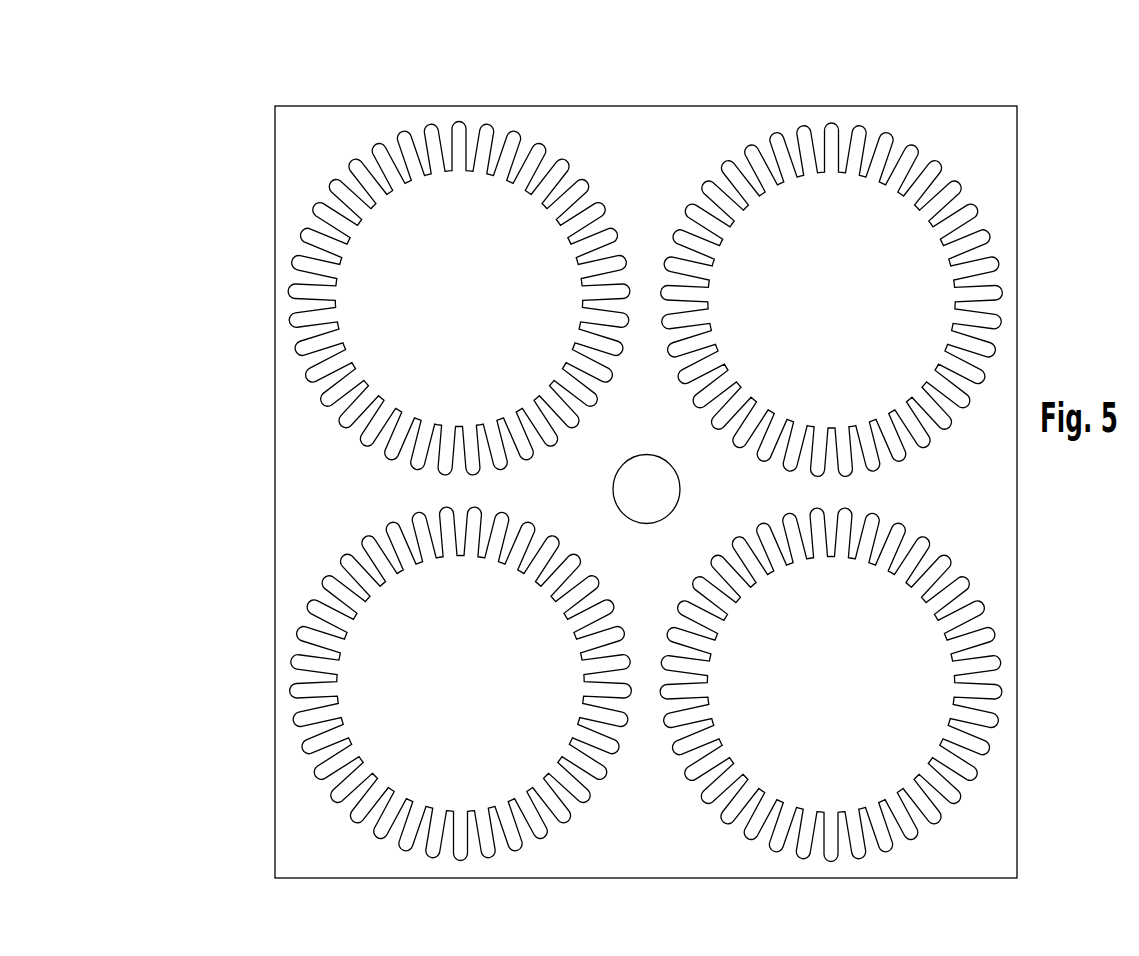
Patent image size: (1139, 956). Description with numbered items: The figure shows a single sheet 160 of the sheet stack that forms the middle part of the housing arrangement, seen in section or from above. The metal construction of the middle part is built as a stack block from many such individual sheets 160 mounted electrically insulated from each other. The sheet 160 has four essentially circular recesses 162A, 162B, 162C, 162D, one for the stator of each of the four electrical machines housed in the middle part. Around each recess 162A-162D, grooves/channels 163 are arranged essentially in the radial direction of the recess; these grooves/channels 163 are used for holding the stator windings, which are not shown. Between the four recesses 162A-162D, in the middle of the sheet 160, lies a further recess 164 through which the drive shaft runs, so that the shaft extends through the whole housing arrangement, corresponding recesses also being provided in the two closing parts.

The sheet 160 is at (1000, 507).
The recess 162A is at (912, 247).
The recess 162B is at (370, 683).
The recess 162C is at (938, 695).
The recess 162D is at (408, 242).
The grooves/channels 163 is at (982, 748).
The recess 164 is at (665, 493).